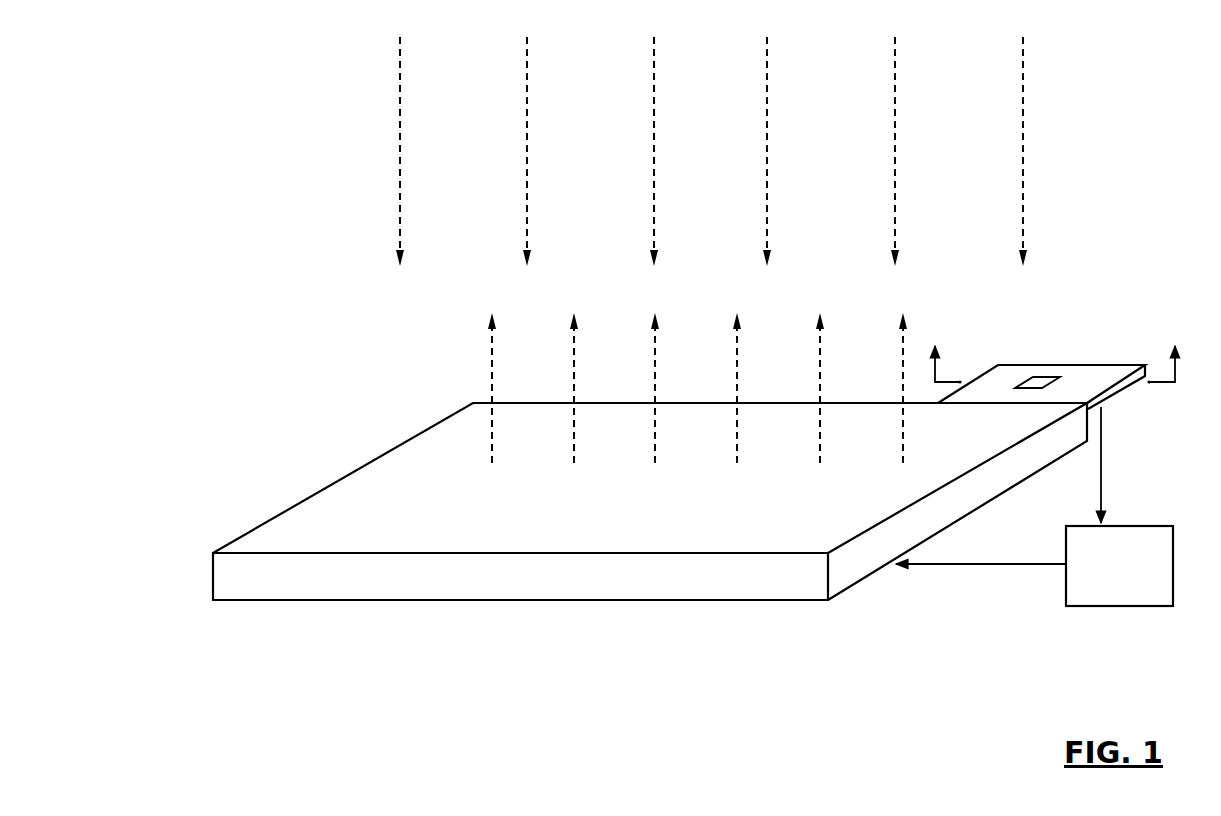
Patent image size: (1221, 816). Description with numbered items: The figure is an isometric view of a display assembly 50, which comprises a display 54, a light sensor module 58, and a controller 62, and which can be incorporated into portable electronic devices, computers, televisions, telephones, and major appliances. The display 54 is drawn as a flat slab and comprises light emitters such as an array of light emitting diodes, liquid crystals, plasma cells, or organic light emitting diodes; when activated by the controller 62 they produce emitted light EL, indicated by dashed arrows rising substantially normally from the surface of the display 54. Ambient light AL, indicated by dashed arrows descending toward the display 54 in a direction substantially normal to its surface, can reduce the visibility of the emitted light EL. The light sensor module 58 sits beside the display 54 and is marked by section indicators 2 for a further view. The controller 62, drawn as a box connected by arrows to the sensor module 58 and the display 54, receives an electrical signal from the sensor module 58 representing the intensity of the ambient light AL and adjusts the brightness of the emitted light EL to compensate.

The display assembly 50 is at (203, 609).
The display 54 is at (515, 574).
The light sensor module 58 is at (1089, 361).
The controller 62 is at (1034, 506).
The section line 2- 2 is at (1055, 350).
The ambient light AL is at (394, 138).
The emitted light EL is at (486, 365).